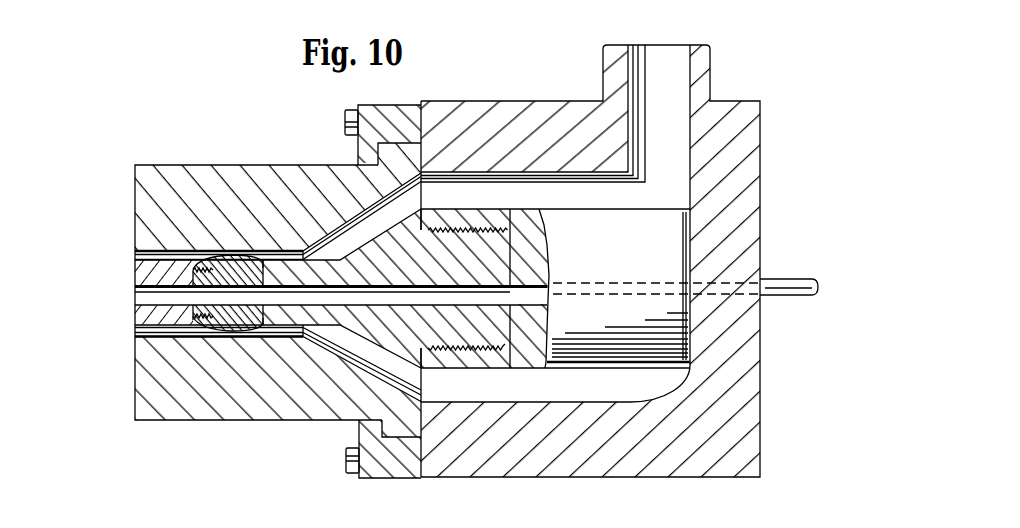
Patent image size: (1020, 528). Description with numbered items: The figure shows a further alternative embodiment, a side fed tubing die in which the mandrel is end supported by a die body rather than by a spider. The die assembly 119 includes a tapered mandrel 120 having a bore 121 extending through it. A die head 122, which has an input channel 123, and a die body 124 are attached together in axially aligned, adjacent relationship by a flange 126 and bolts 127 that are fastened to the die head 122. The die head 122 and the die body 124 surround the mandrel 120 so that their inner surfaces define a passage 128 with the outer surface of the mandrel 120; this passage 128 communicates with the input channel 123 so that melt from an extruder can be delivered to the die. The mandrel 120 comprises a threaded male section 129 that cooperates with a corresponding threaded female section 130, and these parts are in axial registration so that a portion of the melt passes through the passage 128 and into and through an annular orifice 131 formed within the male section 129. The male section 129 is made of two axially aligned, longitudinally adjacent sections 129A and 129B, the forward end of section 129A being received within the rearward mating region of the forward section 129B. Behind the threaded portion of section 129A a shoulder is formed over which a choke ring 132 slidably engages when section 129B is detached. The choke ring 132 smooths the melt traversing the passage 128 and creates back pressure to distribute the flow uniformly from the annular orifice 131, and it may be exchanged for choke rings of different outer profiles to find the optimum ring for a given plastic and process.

The die assembly 119 is at (302, 138).
The tapered mandrel 120 is at (350, 251).
The bore 121 is at (543, 268).
The die head 122 is at (738, 240).
The input channel 123 is at (678, 100).
The die body 124 is at (192, 402).
The flange 126 is at (375, 117).
The bolts 127 is at (345, 125).
The passage 128 is at (363, 358).
The threaded male section 129 is at (383, 251).
The section 129A is at (430, 253).
The forward section 129B is at (145, 272).
The threaded female section 130 is at (527, 205).
The annular orifice 131 is at (137, 253).
The choke ring 132 is at (212, 325).